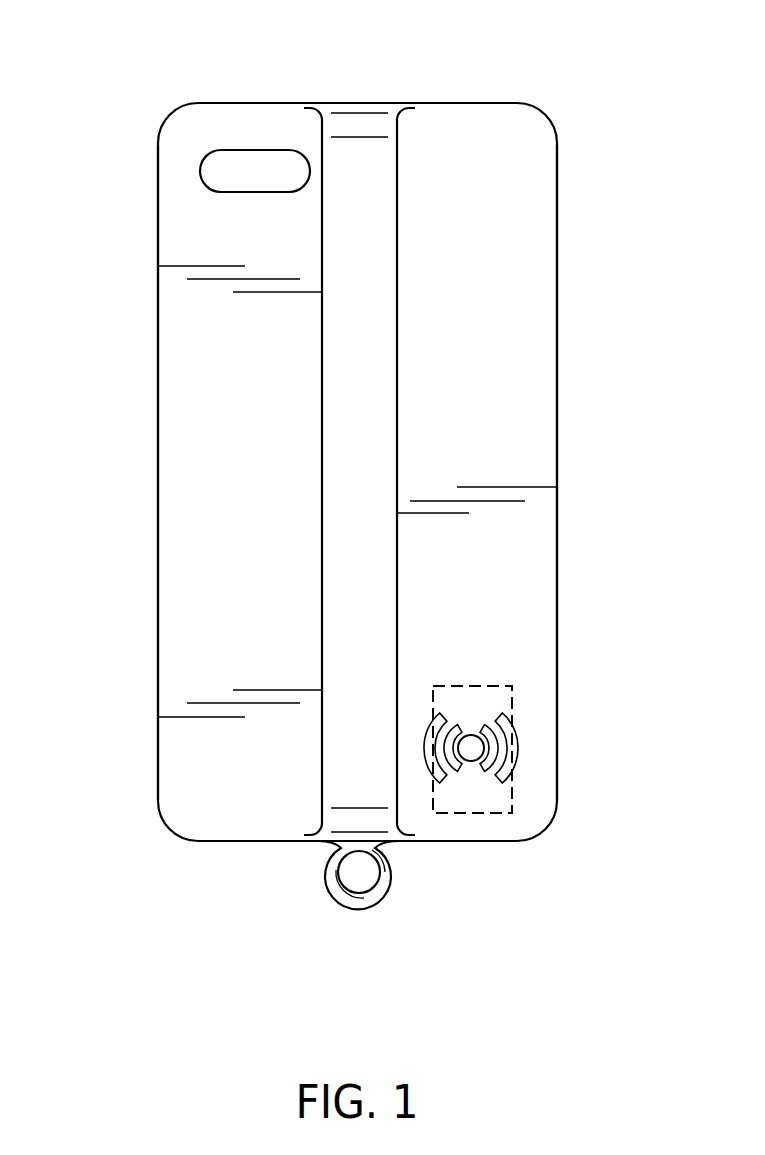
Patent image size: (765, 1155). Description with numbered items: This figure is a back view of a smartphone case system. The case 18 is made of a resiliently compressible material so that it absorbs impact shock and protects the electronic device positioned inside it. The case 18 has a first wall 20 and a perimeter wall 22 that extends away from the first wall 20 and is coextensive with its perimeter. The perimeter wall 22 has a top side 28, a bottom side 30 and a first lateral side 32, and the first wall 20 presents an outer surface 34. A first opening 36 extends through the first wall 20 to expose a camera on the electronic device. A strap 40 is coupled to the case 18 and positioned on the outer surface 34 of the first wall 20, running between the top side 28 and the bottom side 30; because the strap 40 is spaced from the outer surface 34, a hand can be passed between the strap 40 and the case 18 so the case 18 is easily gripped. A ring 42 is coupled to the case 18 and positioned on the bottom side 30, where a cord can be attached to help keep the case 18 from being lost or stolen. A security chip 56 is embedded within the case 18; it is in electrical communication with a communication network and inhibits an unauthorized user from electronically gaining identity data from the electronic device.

The case 18 is at (178, 108).
The first wall 20 is at (453, 120).
The perimeter wall 22 is at (558, 241).
The top side 28 is at (268, 103).
The bottom side 30 is at (237, 843).
The first lateral side 32 is at (158, 482).
The outer surface 34 is at (207, 250).
The first opening 36 is at (253, 152).
The strap 40 is at (322, 373).
The ring 42 is at (357, 908).
The security chip 56 is at (508, 686).